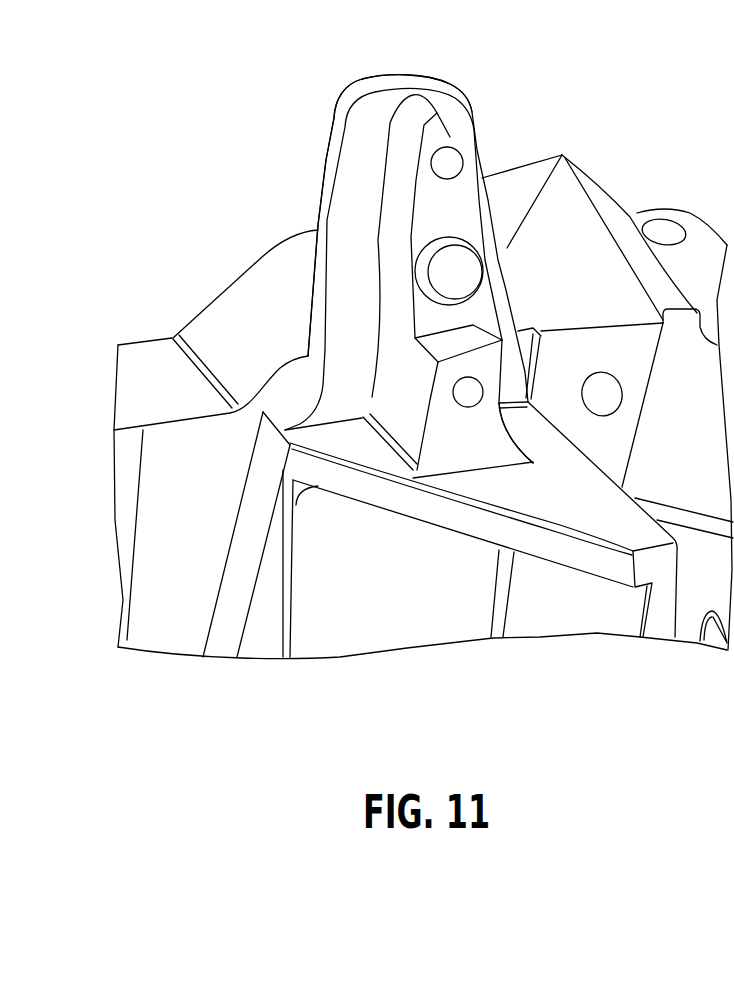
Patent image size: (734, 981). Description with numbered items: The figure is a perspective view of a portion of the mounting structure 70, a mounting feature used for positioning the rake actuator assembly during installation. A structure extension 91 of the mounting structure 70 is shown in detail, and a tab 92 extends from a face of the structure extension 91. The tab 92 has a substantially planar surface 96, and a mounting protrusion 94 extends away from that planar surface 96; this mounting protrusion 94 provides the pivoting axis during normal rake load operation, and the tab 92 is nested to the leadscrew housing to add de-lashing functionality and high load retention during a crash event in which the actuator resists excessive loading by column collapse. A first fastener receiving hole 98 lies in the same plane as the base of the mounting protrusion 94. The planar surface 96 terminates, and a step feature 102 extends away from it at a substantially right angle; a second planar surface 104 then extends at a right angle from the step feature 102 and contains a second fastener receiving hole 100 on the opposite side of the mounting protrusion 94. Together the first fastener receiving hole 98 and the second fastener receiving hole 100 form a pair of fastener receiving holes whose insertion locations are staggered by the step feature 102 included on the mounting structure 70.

The mounting structure 70 is at (190, 240).
The structure extension 91 is at (355, 105).
The tab 92 is at (360, 232).
The mounting protrusion 94 is at (452, 250).
The planar surface 96 is at (433, 217).
The first fastener receiving hole 98 is at (450, 142).
The second fastener receiving hole 100 is at (468, 408).
The step feature 102 is at (467, 338).
The second planar surface 104 is at (492, 447).